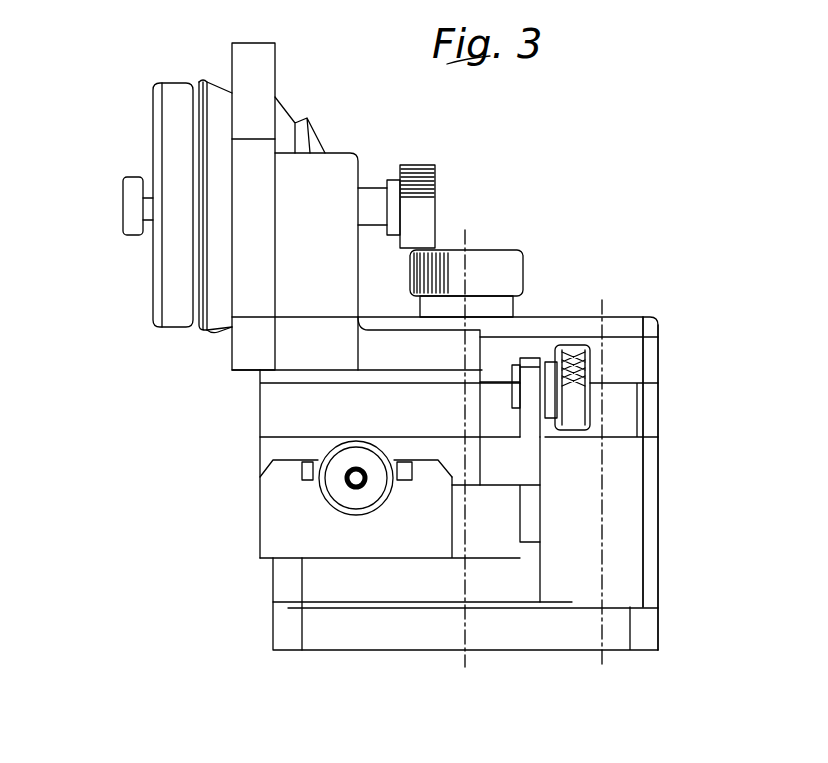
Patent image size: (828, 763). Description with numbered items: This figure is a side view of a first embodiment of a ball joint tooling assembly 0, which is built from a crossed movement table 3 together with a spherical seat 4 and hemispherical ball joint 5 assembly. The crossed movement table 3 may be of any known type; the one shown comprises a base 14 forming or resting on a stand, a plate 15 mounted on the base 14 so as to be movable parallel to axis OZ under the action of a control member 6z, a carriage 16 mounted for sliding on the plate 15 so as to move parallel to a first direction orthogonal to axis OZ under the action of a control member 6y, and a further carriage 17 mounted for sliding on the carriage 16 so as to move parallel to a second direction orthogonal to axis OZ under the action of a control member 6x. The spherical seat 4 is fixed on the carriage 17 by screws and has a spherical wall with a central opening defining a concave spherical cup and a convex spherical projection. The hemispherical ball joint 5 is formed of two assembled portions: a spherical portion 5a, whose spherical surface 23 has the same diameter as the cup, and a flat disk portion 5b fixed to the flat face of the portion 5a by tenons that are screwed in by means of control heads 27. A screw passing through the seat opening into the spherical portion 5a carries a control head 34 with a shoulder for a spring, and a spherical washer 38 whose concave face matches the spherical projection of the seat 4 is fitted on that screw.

The ball joint tooling assembly 0 is at (588, 128).
The crossed movement table 3 is at (665, 505).
The spherical seat 4 is at (268, 65).
The hemispherical ball joint 5 is at (160, 76).
The spherical portion of ball joint 5a is at (220, 90).
The flat disk portion of ball joint 5b is at (172, 130).
The control member 6x is at (590, 370).
The control member 6y is at (337, 493).
The control member 6z is at (513, 268).
The base 14 is at (352, 632).
The plate 15 is at (330, 580).
The carriage 16 is at (273, 450).
The carriage 17 is at (373, 352).
The spherical surface 23 is at (225, 328).
The control head 27 is at (124, 222).
The control head 34 is at (428, 203).
The spherical washer 38 is at (313, 138).